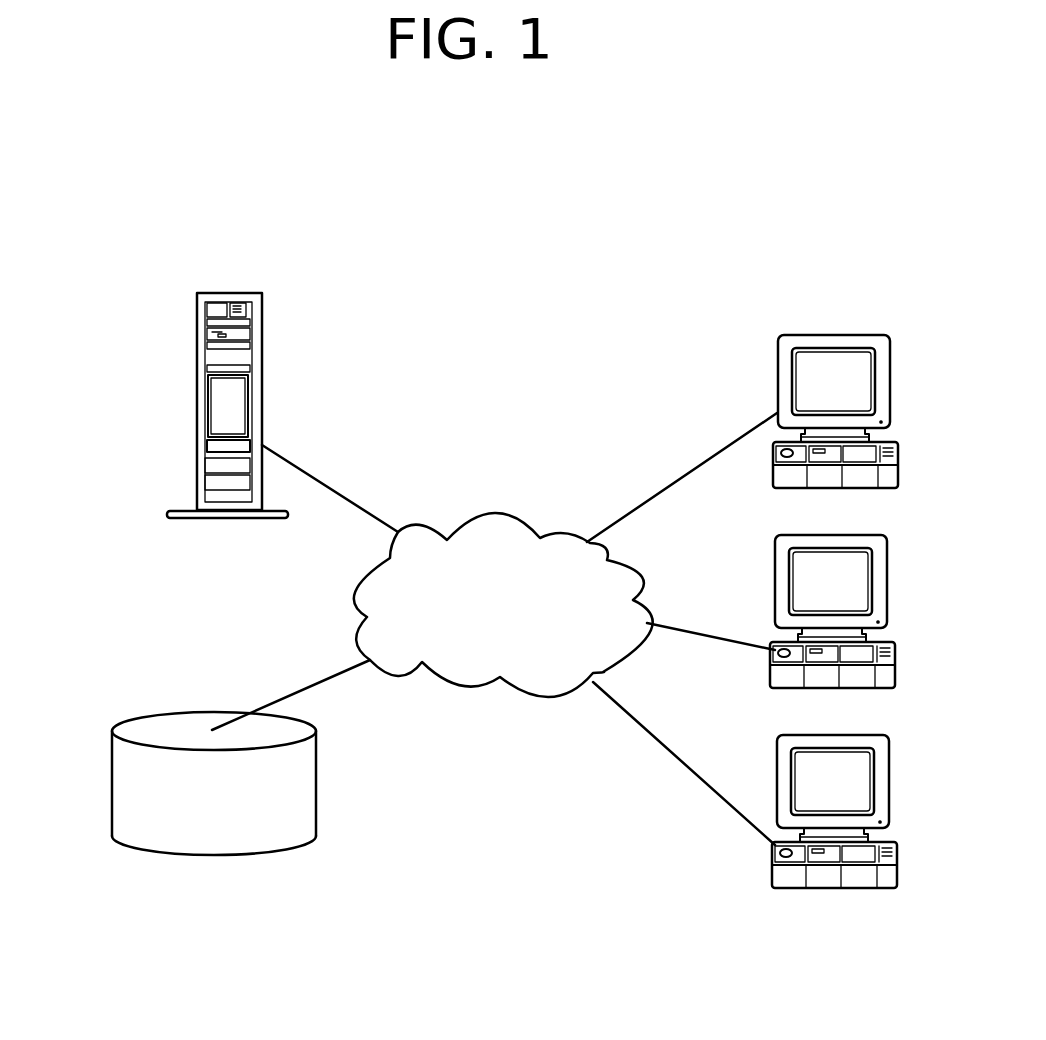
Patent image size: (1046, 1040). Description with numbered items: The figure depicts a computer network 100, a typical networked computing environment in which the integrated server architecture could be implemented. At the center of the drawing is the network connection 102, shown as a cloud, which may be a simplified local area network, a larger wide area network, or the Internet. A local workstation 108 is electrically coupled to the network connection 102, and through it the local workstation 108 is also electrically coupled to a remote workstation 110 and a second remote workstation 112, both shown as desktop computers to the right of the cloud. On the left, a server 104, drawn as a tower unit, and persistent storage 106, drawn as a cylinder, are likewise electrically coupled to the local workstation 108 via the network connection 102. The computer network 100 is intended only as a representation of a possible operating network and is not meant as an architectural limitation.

The computer network 100 is at (520, 430).
The network connection 102 is at (527, 621).
The server 104 is at (232, 293).
The persistent storage 106 is at (112, 788).
The local workstation 108 is at (890, 402).
The remote workstation 110 is at (890, 600).
The remote workstation 112 is at (890, 800).